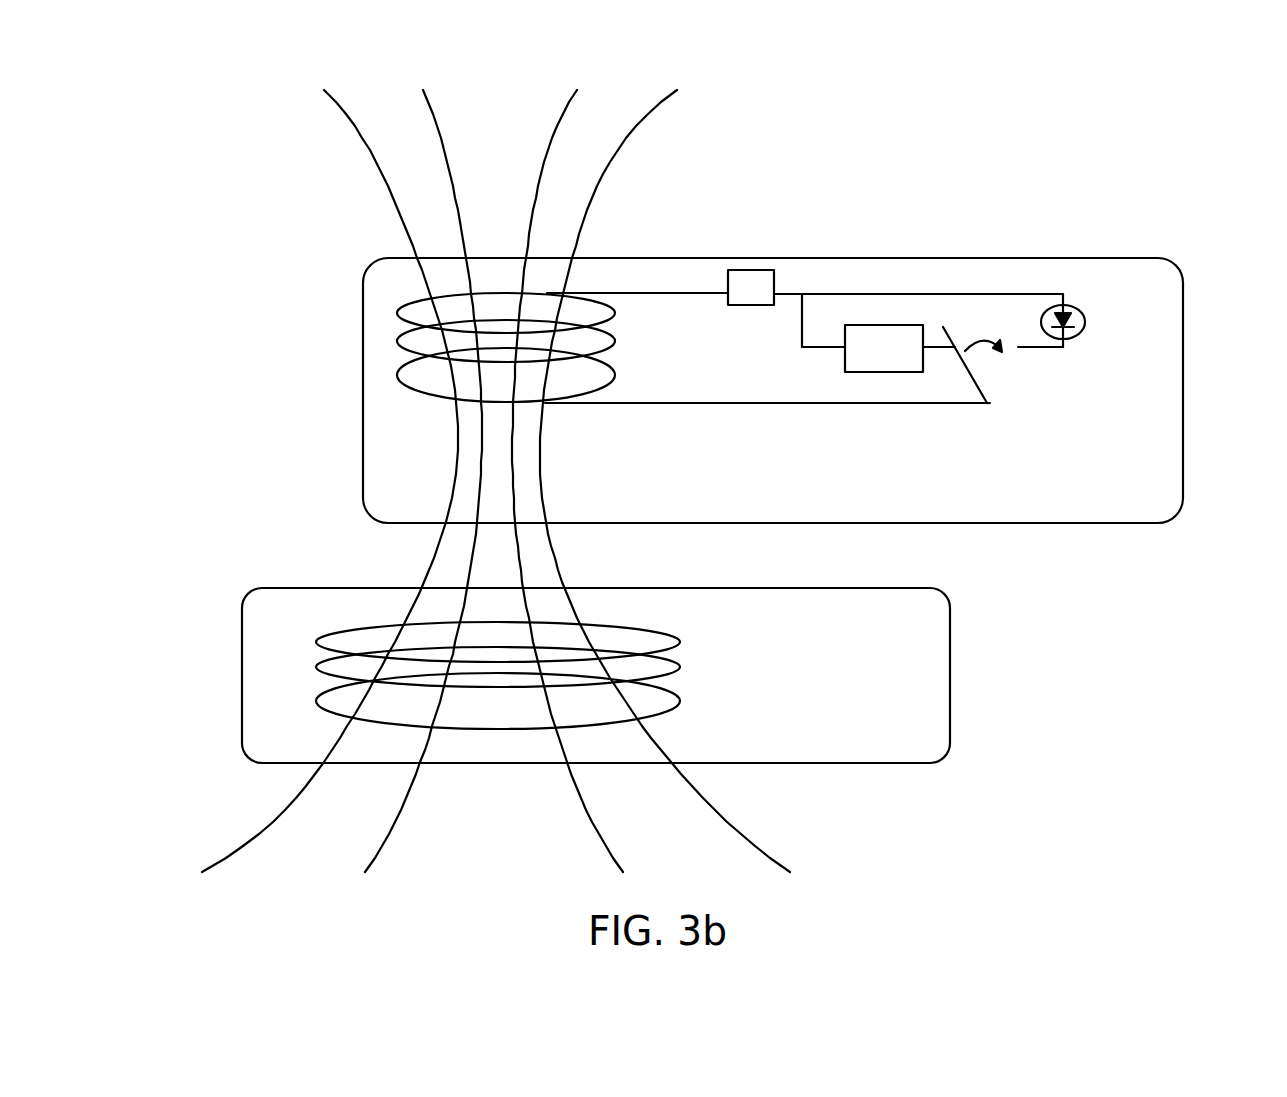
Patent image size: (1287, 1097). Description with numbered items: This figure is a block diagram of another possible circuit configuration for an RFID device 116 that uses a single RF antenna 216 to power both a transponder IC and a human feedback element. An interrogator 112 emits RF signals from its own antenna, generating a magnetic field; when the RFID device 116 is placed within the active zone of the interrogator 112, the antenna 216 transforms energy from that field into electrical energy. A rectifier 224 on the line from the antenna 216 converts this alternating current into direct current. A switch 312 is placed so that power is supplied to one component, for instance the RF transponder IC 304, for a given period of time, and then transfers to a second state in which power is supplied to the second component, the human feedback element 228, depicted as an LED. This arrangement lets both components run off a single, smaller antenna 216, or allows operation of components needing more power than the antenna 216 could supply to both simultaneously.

The interrogator 112 is at (940, 588).
The RFID device 116 is at (1175, 519).
The RF antenna 216 is at (615, 350).
The rectifier 224 is at (754, 270).
The human feedback element 228 is at (1086, 325).
The RF transponder IC 304 is at (845, 366).
The switch 312 is at (1015, 397).